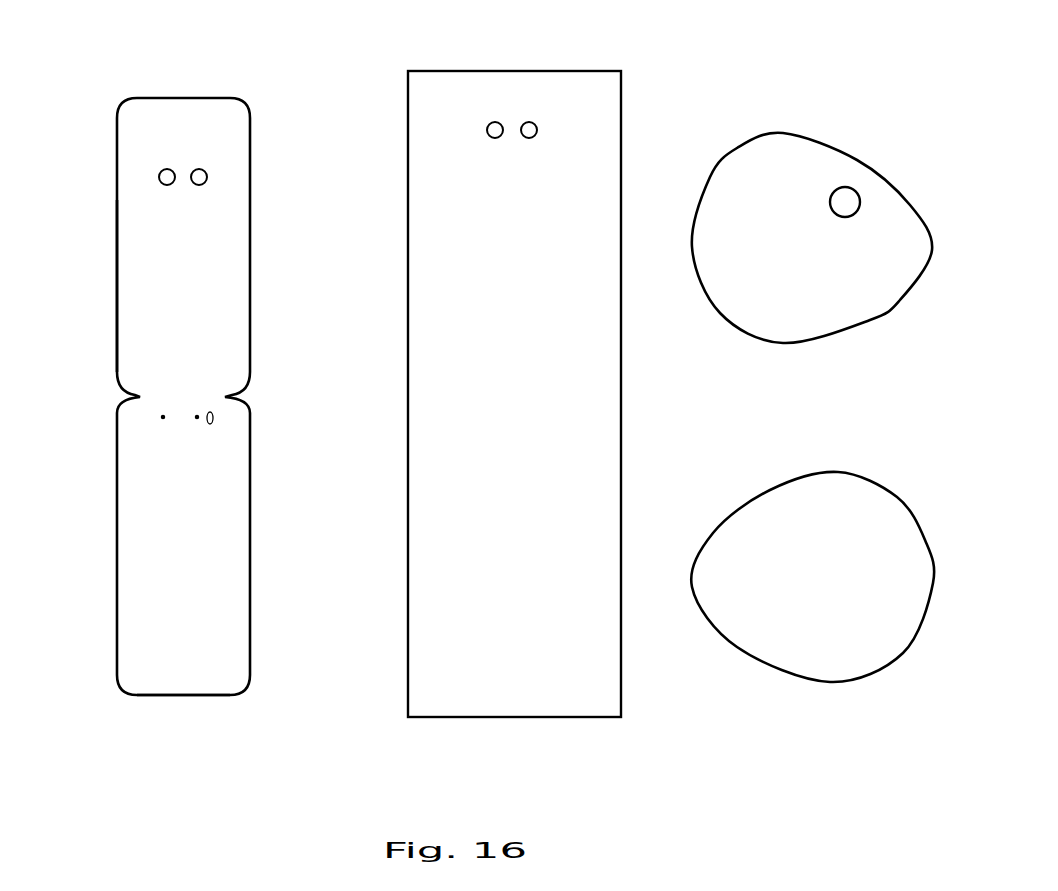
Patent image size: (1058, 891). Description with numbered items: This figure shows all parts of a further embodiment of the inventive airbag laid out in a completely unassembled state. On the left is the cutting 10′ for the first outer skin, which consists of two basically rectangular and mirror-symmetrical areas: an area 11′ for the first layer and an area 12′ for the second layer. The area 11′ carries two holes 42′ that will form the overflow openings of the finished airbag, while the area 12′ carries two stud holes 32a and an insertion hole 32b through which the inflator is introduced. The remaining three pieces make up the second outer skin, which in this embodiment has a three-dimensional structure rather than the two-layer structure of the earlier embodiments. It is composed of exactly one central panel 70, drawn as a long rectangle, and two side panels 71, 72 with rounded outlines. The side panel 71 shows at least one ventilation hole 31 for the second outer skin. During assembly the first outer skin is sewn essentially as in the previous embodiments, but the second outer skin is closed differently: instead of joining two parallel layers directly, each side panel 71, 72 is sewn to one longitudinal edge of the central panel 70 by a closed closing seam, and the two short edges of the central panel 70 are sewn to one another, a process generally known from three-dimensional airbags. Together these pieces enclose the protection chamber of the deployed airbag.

The cutting for the first outer skin 10′ is at (208, 668).
The area for the first layer 11′ is at (128, 284).
The area for the second layer 12′ is at (182, 673).
The hole for overflow opening 42′ is at (200, 168).
The stud holes 32a is at (162, 417).
The insertion hole 32b is at (213, 419).
The central panel 70 is at (481, 692).
The side panel 71 is at (793, 322).
The ventilation hole 31 is at (843, 198).
The side panel 72 is at (830, 670).